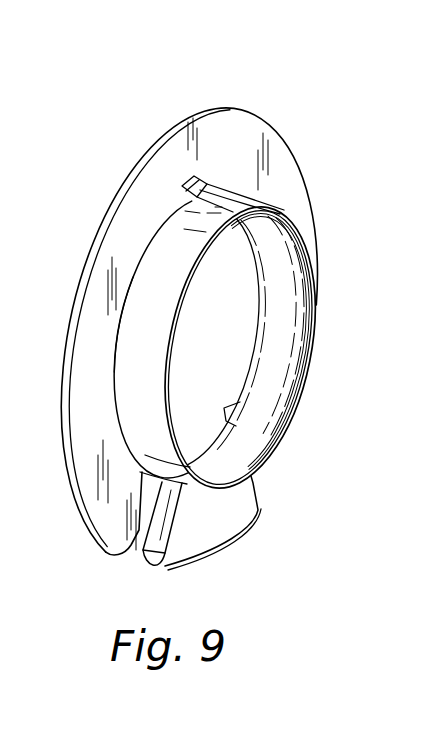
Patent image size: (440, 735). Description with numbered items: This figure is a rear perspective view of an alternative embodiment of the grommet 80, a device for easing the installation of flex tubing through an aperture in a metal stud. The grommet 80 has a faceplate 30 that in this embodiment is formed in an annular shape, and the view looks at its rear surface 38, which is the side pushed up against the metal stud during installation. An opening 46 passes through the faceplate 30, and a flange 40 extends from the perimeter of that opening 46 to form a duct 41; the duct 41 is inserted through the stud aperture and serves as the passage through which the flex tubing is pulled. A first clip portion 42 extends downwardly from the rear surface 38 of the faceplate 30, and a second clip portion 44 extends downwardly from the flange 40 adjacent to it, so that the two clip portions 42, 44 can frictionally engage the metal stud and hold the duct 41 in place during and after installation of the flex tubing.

The grommet 80 is at (92, 80).
The faceplate 30 is at (160, 139).
The rear surface 38 is at (143, 240).
The flange 40 is at (153, 291).
The duct 41 is at (233, 298).
The first clip portion 42 is at (102, 508).
The second clip portion 44 is at (220, 537).
The opening 46 is at (119, 324).